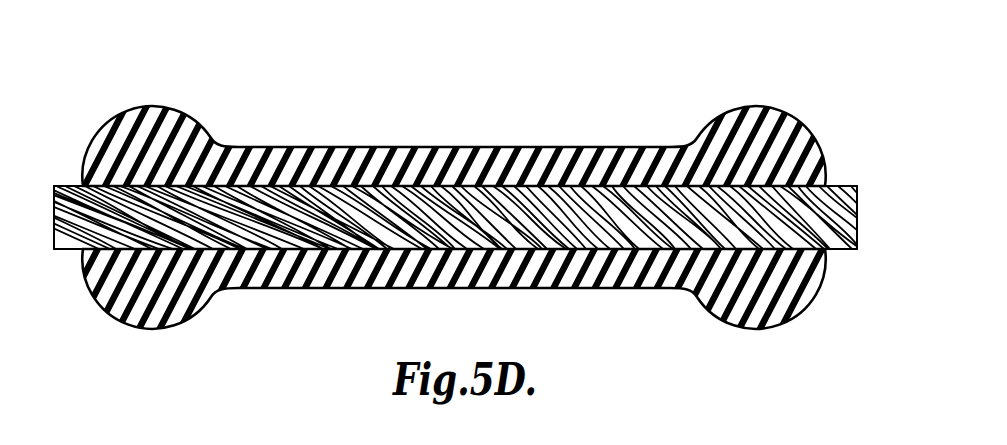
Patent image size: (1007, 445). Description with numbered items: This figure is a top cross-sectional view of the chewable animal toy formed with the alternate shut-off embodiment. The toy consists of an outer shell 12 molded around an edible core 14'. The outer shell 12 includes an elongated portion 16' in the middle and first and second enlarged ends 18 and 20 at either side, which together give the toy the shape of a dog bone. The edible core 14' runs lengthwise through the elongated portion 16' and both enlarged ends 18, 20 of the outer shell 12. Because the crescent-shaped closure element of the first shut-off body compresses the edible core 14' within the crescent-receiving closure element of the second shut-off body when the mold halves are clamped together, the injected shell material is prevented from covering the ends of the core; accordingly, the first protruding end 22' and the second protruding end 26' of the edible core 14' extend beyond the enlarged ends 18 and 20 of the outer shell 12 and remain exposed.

The outer shell 12 is at (682, 124).
The edible core 14' is at (457, 174).
The elongated portion 16' is at (457, 217).
The first enlarged end 18 is at (137, 108).
The second enlarged end 20 is at (783, 113).
The first protruding end 22' is at (68, 182).
The second protruding end 26' is at (848, 181).